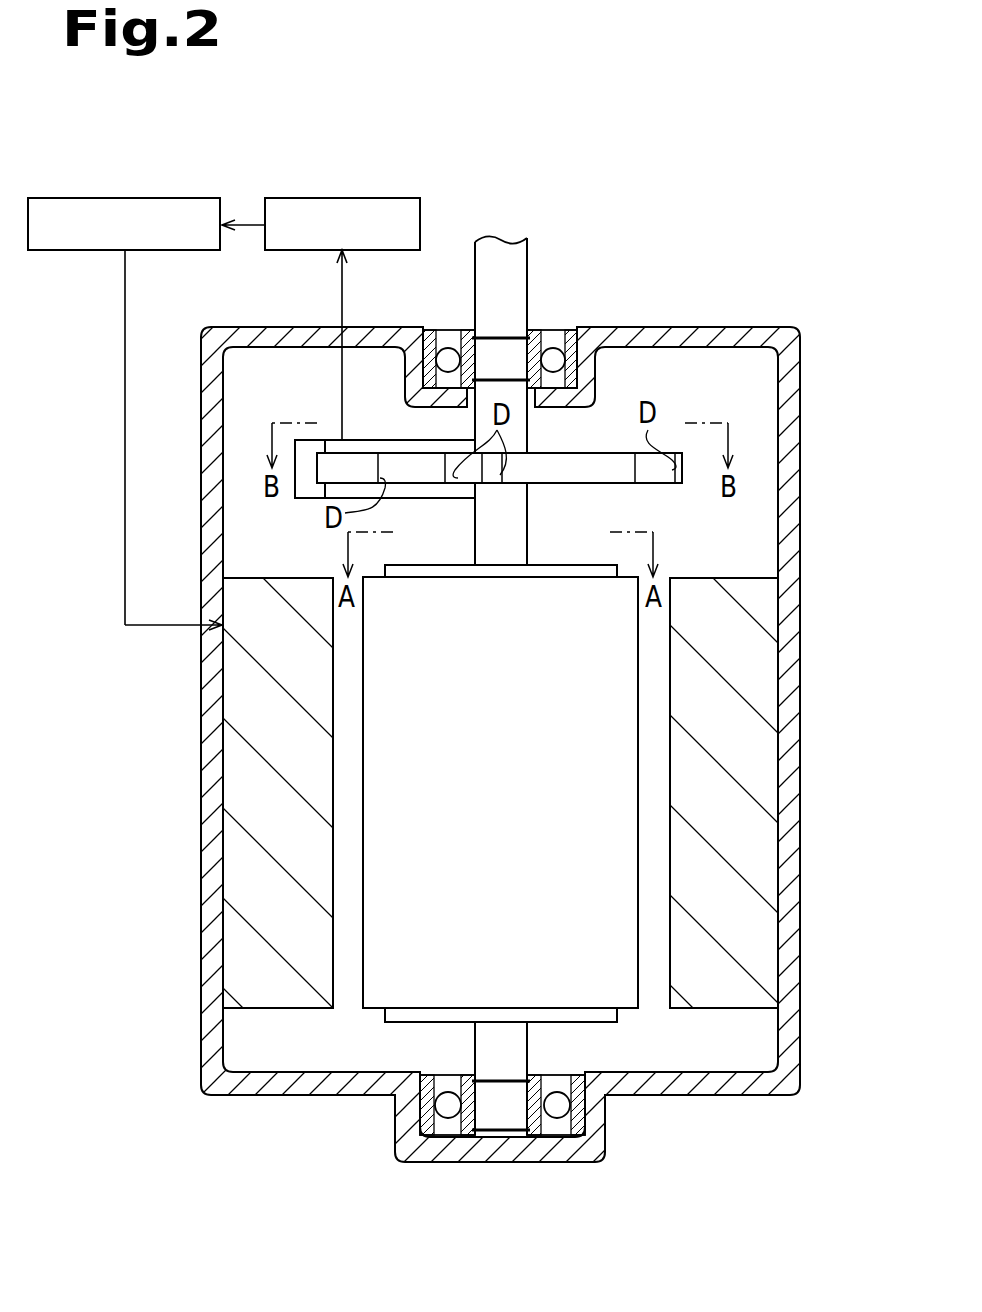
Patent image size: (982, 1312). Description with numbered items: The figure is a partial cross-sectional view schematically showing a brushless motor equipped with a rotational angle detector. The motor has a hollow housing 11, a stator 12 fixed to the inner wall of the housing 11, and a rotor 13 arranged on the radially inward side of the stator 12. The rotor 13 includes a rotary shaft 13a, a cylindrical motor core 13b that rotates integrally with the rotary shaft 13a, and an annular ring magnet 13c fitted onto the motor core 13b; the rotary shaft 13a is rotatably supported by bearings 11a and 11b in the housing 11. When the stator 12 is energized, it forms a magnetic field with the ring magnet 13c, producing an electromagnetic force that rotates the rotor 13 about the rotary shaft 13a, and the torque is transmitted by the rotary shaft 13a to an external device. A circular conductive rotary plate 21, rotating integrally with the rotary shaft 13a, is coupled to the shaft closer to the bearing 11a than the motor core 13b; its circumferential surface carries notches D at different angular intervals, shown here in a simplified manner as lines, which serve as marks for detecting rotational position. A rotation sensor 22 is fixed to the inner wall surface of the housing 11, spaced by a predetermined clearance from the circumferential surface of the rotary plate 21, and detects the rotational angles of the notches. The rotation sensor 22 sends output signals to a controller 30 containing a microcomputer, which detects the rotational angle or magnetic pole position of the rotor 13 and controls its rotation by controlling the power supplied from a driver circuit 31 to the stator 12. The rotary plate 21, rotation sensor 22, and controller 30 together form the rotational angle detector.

The housing 11 is at (802, 533).
The bearing 11a is at (595, 335).
The bearing 11b is at (596, 1126).
The stator 12 is at (250, 705).
The rotor 13 is at (349, 789).
The rotary shaft 13a is at (530, 524).
The motor core 13b is at (428, 565).
The ring magnet 13c is at (363, 685).
The rotary plate 21 is at (545, 452).
The rotation sensor 22 is at (360, 440).
The controller 30 is at (342, 198).
The driver circuit 31 is at (125, 198).